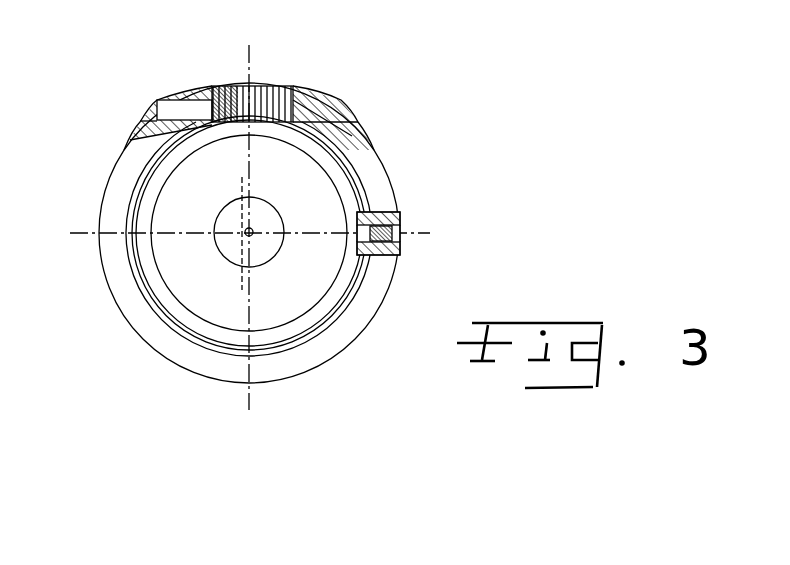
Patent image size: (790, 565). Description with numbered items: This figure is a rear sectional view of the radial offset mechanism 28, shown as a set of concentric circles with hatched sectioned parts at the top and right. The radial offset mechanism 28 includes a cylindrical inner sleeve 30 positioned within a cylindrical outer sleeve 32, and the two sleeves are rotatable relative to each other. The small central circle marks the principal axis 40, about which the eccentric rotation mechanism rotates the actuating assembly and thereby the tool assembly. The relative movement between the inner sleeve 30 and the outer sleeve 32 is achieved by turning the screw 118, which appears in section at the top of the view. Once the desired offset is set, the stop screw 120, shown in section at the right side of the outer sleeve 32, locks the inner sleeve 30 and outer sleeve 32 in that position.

The radial offset mechanism 28 is at (466, 222).
The inner sleeve 30 is at (188, 320).
The outer sleeve 32 is at (123, 282).
The principal axis 40 is at (250, 233).
The screw 118 is at (233, 85).
The stop screw 120 is at (392, 211).